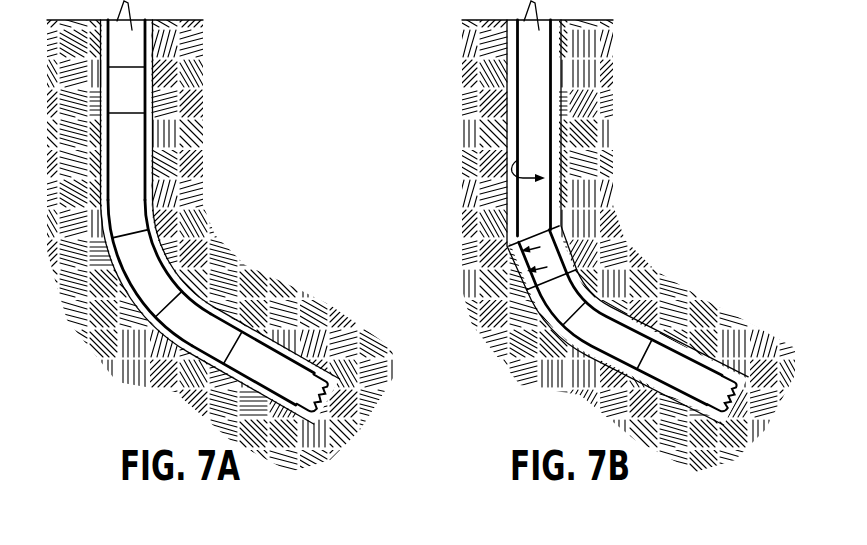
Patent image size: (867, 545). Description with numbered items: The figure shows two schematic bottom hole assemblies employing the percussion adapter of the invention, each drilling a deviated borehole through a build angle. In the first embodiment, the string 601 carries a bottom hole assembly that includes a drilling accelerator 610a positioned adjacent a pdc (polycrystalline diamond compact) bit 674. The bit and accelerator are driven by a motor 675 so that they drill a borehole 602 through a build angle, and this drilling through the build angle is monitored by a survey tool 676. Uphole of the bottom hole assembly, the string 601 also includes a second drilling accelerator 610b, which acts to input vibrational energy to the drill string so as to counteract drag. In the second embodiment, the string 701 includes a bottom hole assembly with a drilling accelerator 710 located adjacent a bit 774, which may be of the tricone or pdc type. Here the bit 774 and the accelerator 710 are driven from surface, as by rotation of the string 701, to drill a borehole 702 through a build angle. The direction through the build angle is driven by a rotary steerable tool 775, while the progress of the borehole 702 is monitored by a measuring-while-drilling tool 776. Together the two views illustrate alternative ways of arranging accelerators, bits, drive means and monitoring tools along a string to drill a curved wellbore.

In FIG. 7A, the string 601 is at (131, 176).
In FIG. 7A, the borehole 602 is at (143, 292).
In FIG. 7A, the drilling accelerator 610a is at (253, 353).
In FIG. 7A, the second drilling accelerator 610b is at (130, 84).
In FIG. 7A, the pdc bit 674 is at (327, 388).
In FIG. 7A, the motor 675 is at (203, 340).
In FIG. 7A, the survey tool 676 is at (153, 263).
In FIG. 7B, the string 701 is at (540, 112).
In FIG. 7B, the borehole 702 is at (558, 153).
In FIG. 7B, the drilling accelerator 710 is at (680, 360).
In FIG. 7B, the bit 774 is at (730, 415).
In FIG. 7B, the rotary steerable tool 775 is at (558, 248).
In FIG. 7B, the measuring-while-drilling tool 776 is at (572, 288).